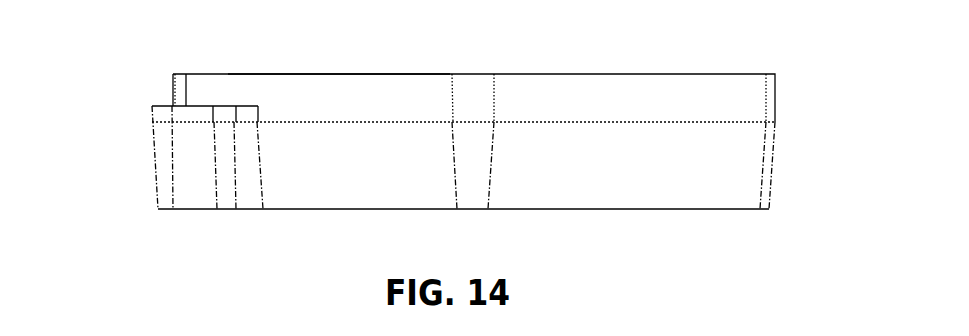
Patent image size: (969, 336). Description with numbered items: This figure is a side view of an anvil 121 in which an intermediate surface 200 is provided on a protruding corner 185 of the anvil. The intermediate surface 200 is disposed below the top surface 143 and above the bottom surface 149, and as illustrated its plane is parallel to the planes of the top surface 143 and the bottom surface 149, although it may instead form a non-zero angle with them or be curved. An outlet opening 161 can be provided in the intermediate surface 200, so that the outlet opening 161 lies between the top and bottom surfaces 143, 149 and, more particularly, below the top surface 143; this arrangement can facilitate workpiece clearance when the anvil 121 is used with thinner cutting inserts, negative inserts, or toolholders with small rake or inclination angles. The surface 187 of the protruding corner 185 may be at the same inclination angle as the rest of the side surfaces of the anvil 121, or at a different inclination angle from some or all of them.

The anvil 121 is at (781, 58).
The top surface 143 is at (603, 74).
The intermediate surface 200 is at (228, 75).
The outlet opening 161 is at (166, 99).
The surface of the protruding corner 187 is at (155, 143).
The protruding corner 185 is at (154, 153).
The bottom surface 149 is at (690, 211).